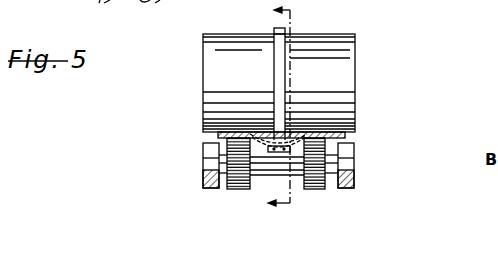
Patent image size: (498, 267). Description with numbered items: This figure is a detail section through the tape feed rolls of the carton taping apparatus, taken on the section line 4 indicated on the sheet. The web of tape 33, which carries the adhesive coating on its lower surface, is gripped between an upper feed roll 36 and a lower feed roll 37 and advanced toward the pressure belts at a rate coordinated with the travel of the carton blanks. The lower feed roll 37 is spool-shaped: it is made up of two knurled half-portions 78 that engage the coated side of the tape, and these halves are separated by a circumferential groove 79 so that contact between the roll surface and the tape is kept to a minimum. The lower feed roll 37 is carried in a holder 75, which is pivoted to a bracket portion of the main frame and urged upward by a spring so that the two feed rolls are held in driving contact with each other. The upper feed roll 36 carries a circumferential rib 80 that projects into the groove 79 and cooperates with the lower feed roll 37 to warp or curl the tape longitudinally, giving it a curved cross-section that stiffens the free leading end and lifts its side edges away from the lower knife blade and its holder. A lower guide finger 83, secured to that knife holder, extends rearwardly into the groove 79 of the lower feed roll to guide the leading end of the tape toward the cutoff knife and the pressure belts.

The section line 4- 4 is at (286, 109).
The web of tape 33 is at (337, 137).
The upper feed roll 36 is at (340, 73).
The lower feed roll 37 is at (210, 164).
The holder 75 is at (207, 182).
The knurled half-portions 78 is at (226, 156).
The circumferential groove 79 is at (252, 190).
The circumferential rib 80 is at (274, 33).
The lower guide finger 83 is at (277, 153).